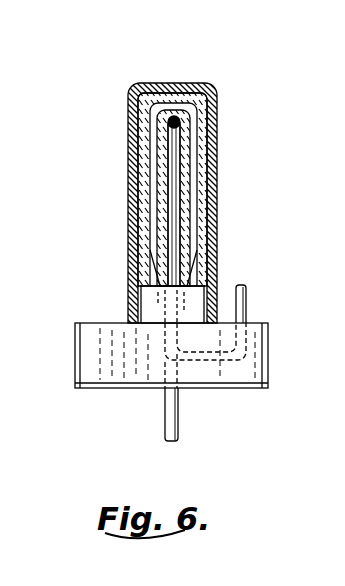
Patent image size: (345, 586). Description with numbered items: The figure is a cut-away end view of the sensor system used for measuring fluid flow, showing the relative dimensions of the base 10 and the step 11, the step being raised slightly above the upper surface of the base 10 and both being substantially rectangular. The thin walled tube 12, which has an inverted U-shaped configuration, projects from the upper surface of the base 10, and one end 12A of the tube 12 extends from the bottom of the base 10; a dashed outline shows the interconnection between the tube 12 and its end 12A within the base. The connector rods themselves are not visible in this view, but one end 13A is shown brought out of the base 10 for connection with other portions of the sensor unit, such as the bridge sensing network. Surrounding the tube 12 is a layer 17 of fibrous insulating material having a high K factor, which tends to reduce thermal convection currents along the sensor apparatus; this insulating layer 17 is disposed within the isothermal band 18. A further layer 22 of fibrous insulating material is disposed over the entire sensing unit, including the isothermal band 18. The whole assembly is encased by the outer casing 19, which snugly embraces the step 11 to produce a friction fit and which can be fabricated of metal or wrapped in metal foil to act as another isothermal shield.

The base portion 10 is at (73, 323).
The step portion 11 is at (197, 297).
The thin walled tube 12 is at (158, 122).
The tube end 12A is at (178, 421).
The connector rod end 13A is at (244, 308).
The insulating layer 17 is at (188, 148).
The isothermal band 18 is at (200, 191).
The outer casing 19 is at (203, 82).
The further insulating layer 22 is at (213, 110).